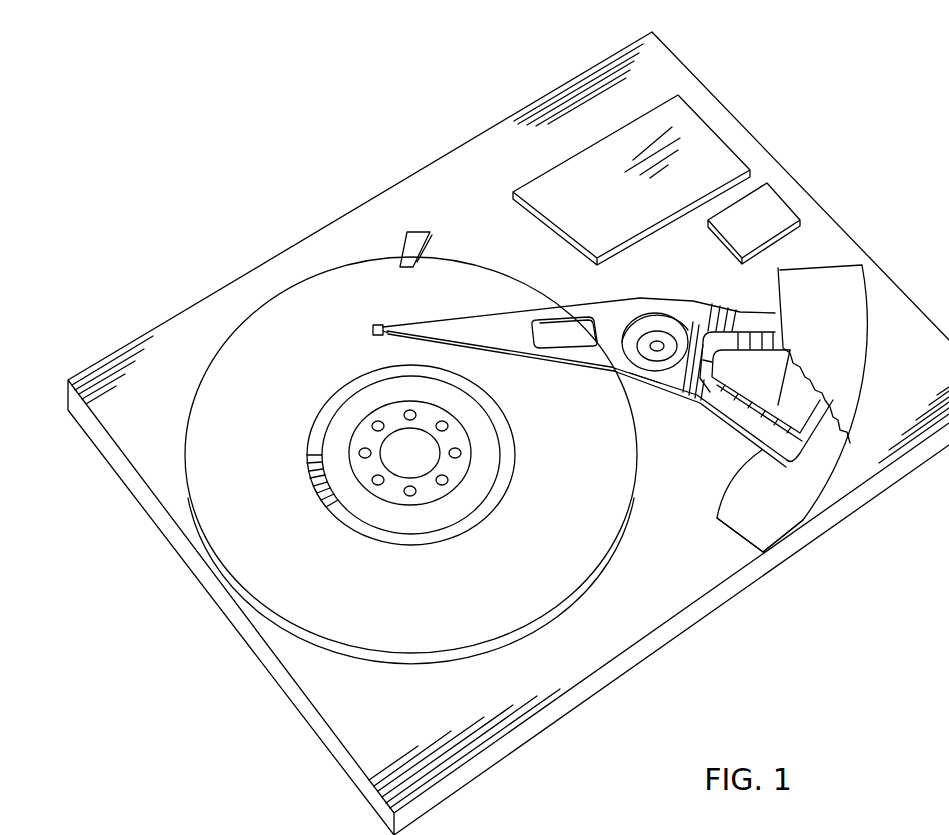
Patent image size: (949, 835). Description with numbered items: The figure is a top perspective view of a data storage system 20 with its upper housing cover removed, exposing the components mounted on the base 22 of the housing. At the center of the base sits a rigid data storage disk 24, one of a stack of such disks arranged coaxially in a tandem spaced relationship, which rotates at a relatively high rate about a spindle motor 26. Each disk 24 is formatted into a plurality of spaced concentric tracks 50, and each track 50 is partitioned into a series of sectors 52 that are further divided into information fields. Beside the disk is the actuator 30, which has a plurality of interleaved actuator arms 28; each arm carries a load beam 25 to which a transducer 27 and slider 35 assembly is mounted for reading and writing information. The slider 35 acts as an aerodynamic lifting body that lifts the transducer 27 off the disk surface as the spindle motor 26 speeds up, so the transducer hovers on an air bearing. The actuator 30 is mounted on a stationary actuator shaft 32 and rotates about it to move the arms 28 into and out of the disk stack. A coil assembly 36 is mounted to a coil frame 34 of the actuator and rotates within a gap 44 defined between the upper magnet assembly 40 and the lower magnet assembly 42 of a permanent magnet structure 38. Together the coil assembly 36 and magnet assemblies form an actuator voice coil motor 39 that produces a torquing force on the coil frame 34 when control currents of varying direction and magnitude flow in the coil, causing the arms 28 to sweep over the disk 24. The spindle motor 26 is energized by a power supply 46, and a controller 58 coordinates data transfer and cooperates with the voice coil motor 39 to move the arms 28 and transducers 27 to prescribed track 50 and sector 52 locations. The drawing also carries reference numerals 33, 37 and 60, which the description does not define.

The data storage system 20 is at (820, 146).
The base 22 is at (683, 624).
The data storage disk 24 is at (215, 441).
The load beam 25 is at (392, 333).
The spindle motor 26 is at (432, 478).
The transducer 27 is at (378, 338).
The actuator arm 28 is at (505, 335).
The actuator 30 is at (672, 387).
The actuator shaft 32 is at (657, 335).
The pivot bearing 33 is at (642, 343).
The coil frame 34 is at (707, 312).
The slider 35 is at (372, 328).
The coil assembly 36 is at (760, 386).
The arm edge 37 is at (647, 398).
The permanent magnet structure 38 is at (866, 292).
The actuator voice coil motor 39 is at (760, 451).
The upper magnet assembly 40 is at (855, 340).
The lower magnet assembly 42 is at (737, 522).
The gap 44 is at (828, 422).
The power supply 46 is at (578, 216).
The track 50 is at (322, 410).
The sector 52 is at (318, 478).
The controller 58 is at (743, 229).
The crash stop tab 60 is at (423, 230).